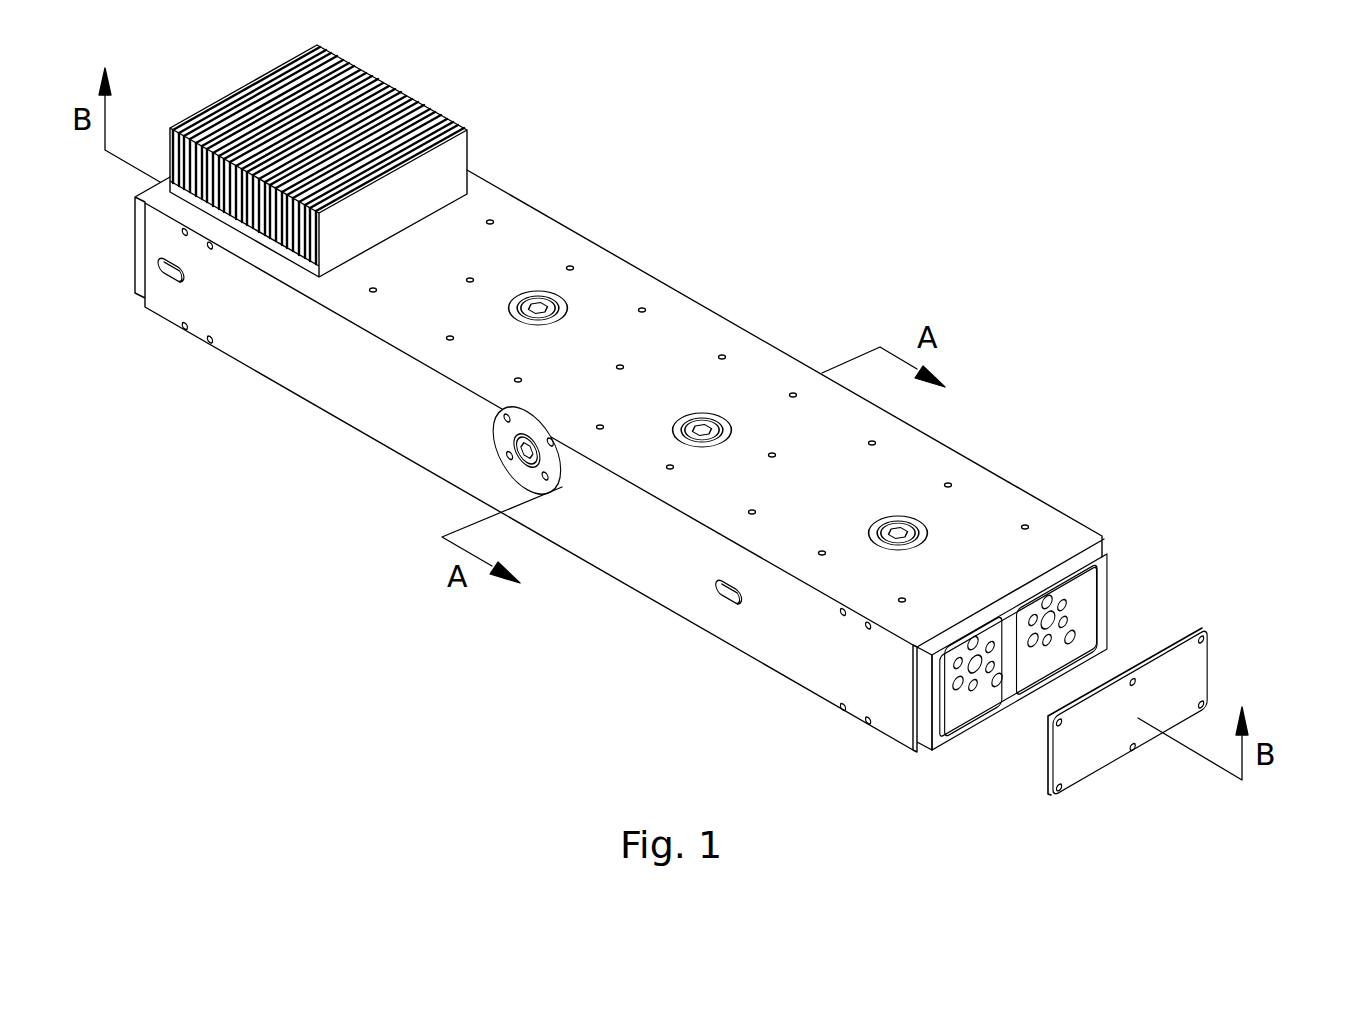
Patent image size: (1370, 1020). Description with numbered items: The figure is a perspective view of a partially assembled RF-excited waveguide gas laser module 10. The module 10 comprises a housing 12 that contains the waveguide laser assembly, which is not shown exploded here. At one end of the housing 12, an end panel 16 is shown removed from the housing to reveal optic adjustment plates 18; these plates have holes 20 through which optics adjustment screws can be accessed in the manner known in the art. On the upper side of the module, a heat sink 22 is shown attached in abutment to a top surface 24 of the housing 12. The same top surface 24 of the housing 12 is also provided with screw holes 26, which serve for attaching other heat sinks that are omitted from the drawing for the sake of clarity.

The RF-excited waveguide gas laser module 10 is at (1011, 343).
The housing 12 is at (1010, 484).
The end panel 16 is at (1188, 680).
The optic adjustment plates 18 is at (1072, 605).
The holes 20 is at (1070, 622).
The heat sink 22 is at (437, 178).
The top surface 24 is at (962, 483).
The screw holes 26 is at (571, 265).